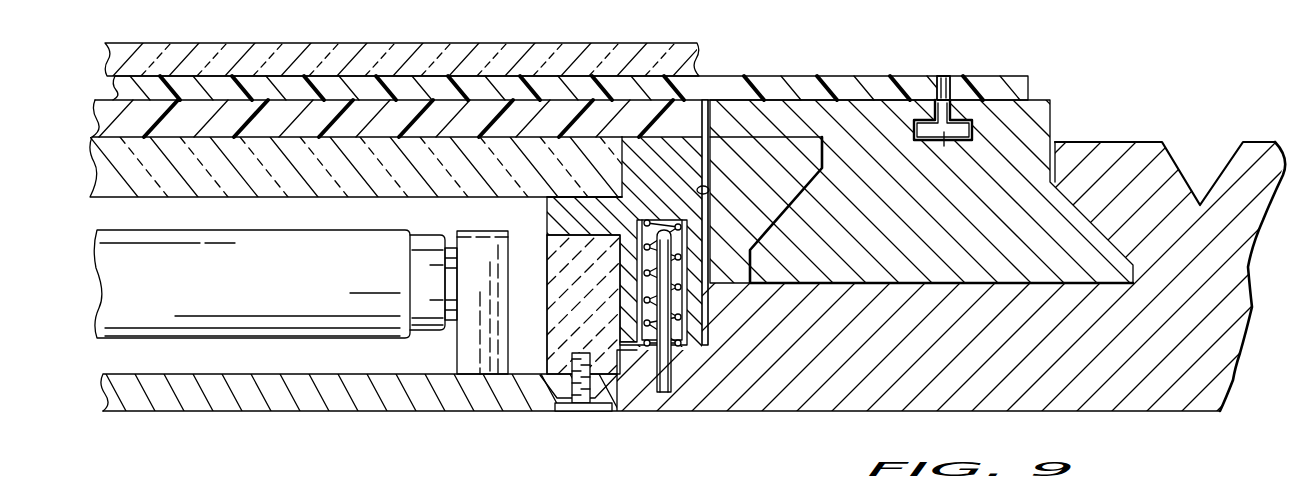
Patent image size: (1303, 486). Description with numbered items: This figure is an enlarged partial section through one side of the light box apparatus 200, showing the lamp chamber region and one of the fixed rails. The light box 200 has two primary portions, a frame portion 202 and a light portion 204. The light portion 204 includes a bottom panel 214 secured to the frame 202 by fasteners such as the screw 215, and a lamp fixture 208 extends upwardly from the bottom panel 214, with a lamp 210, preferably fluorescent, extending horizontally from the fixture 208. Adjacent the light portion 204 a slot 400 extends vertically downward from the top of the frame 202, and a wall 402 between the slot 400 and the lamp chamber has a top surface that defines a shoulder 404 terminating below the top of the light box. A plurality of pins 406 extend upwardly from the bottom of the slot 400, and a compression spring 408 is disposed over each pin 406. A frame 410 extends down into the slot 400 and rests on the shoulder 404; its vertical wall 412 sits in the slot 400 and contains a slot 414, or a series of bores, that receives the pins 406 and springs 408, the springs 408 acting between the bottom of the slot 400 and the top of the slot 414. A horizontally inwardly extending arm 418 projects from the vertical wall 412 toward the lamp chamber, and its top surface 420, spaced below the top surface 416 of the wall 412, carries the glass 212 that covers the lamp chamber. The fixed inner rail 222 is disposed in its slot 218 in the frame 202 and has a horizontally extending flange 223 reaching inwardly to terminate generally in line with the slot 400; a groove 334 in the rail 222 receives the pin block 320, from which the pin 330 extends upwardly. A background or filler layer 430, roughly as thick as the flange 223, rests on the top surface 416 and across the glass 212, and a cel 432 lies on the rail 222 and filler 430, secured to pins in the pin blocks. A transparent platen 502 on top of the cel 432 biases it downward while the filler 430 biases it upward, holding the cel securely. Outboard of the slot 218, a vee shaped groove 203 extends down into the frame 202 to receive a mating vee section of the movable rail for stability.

The light box apparatus 200 is at (703, 287).
The frame portion 202 is at (796, 405).
The vee shaped groove 203 is at (1172, 152).
The light portion 204 is at (368, 402).
The lamp fixture 208 is at (497, 232).
The lamp 210 is at (105, 298).
The glass 212 is at (98, 181).
The bottom panel 214 is at (282, 405).
The screw 215 is at (583, 413).
The slot 218 is at (1052, 155).
The fixed inner rail 222 is at (906, 163).
The horizontally extending flange 223 is at (756, 114).
The pin block 320 is at (944, 147).
The pin 330 is at (945, 75).
The slot or groove 334 is at (954, 112).
The slot 400 is at (709, 189).
The wall 402 is at (584, 306).
The shoulder 404 is at (603, 329).
The pin 406 is at (674, 386).
The compression spring 408 is at (662, 306).
The frame 410 is at (712, 168).
The vertical wall 412 is at (611, 240).
The slot 414 is at (690, 308).
The top surface 416 is at (678, 136).
The horizontally inwardly extending arm 418 is at (560, 216).
The top surface 420 is at (594, 195).
The background layer or filler element 430 is at (97, 117).
The cel 432 is at (117, 92).
The transparent platen 502 is at (700, 52).